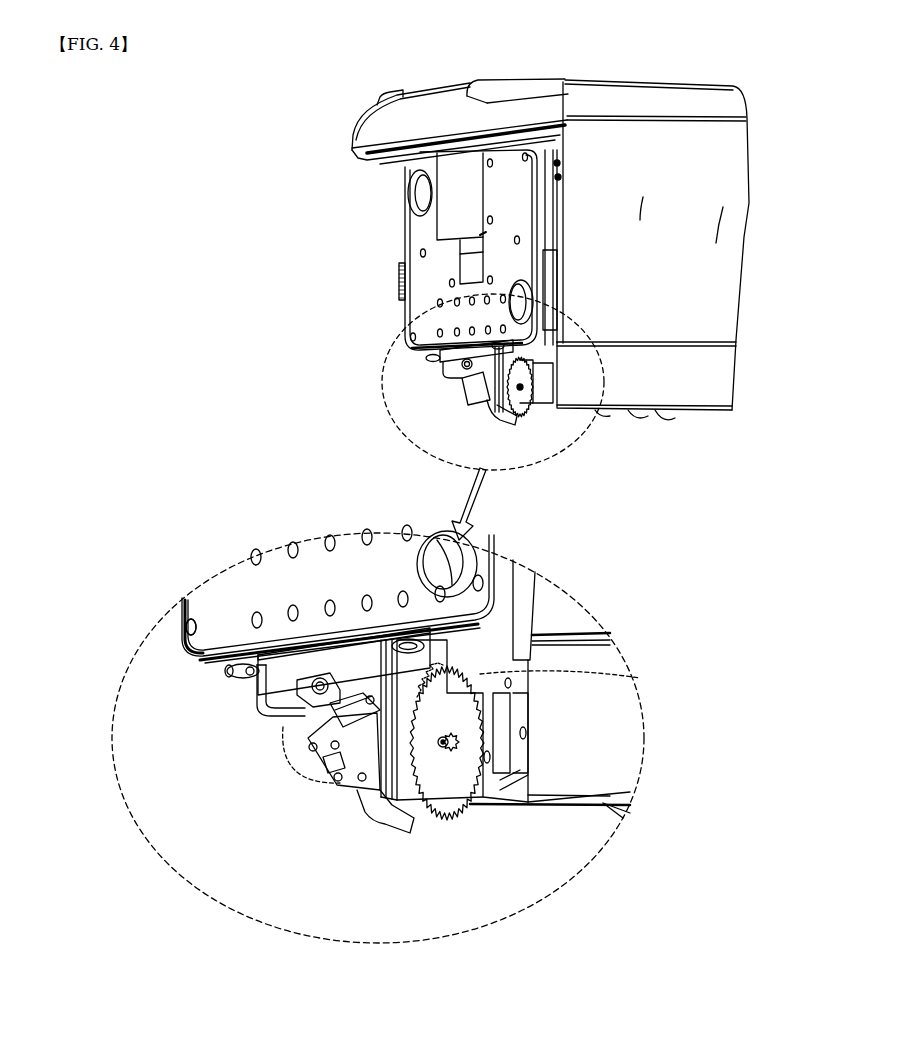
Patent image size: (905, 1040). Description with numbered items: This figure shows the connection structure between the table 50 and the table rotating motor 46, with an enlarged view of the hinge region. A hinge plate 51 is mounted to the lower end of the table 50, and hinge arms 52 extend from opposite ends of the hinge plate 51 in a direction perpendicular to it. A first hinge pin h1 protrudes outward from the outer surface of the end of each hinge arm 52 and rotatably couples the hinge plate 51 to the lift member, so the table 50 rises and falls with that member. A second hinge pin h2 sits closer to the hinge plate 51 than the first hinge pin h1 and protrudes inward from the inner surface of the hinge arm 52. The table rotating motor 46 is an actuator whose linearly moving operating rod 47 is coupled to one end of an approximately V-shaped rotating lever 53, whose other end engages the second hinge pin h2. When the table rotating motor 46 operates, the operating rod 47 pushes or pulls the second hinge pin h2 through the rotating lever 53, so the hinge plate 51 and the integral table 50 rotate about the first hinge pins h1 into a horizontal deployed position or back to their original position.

The table 50 is at (415, 240).
The hinge plate 51 is at (467, 355).
The hinge arms 52 is at (625, 663).
The rotating lever 53 is at (278, 708).
The operating rod 47 is at (297, 723).
The table rotating motor 46 is at (315, 767).
The first hinge pin h1 is at (228, 672).
The second hinge pin h2 is at (235, 648).